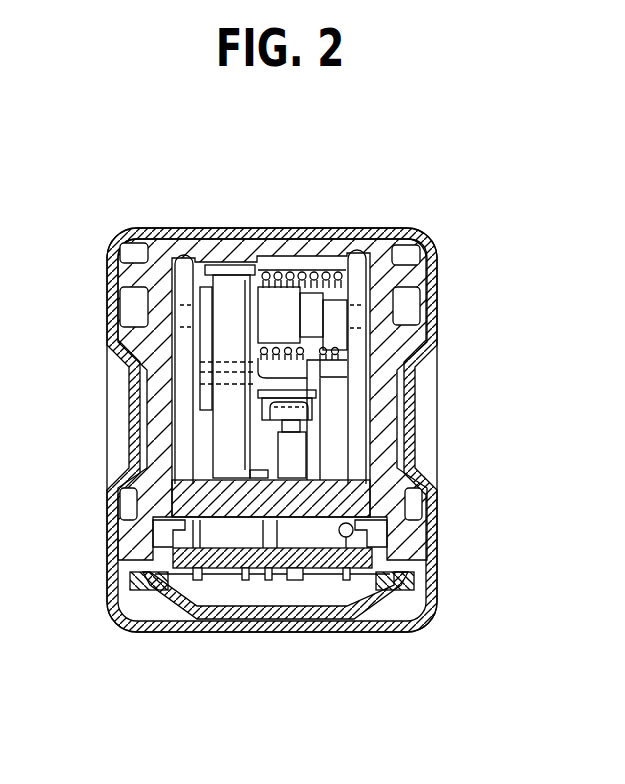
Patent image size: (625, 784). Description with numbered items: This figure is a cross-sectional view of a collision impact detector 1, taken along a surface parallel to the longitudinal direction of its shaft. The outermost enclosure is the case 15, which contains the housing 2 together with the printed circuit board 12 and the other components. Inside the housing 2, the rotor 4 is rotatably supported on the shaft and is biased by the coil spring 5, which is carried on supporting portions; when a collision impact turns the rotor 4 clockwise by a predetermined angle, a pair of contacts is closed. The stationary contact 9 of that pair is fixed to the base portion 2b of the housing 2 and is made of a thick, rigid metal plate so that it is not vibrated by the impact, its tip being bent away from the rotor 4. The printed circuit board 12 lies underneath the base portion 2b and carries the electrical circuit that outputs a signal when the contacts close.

The impact detector 1 is at (419, 184).
The housing 2 is at (356, 399).
The base portion 2b is at (218, 507).
The rotor 4 is at (220, 431).
The coil spring 5 is at (291, 272).
The stationary contact 9 is at (297, 453).
The printed circuit board 12 is at (320, 560).
The case 15 is at (191, 233).